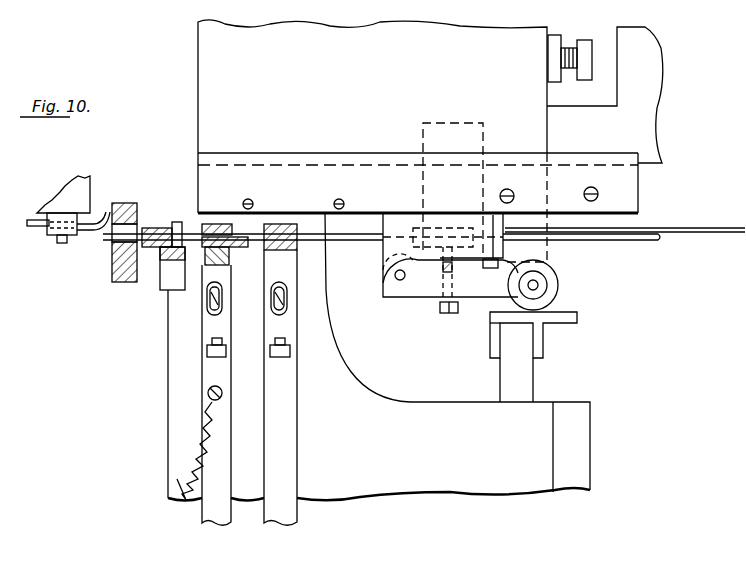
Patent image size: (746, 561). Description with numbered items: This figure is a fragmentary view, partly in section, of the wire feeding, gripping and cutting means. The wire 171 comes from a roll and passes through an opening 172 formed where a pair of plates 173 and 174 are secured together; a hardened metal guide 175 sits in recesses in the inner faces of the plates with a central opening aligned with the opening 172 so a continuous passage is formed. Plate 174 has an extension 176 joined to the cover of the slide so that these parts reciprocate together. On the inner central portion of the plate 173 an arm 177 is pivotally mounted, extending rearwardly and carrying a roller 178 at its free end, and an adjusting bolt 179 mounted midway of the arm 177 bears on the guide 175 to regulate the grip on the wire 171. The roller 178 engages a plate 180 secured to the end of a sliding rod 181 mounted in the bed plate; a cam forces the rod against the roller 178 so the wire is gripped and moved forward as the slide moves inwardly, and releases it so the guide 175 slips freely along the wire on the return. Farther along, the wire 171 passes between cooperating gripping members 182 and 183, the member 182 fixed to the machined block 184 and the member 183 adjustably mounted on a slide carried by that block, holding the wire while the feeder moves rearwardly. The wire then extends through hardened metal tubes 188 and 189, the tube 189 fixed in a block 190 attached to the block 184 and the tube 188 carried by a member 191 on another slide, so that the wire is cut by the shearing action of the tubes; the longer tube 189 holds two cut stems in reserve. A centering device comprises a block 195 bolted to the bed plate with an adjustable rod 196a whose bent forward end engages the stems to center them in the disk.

The wire 171 is at (668, 224).
The opening 172 is at (393, 240).
The plate 173 is at (547, 250).
The plate 174 is at (536, 224).
The hardened metal guide 175 is at (437, 225).
The extension 176 is at (484, 150).
The arm 177 is at (430, 303).
The roller 178 is at (508, 307).
The adjusting bolt 179 is at (452, 294).
The plate 180 is at (556, 323).
The sliding rod 181 is at (526, 392).
The gripping member 182 is at (279, 224).
The gripping member 183 is at (298, 256).
The machined block 184 is at (403, 410).
The hardened metal tube 188 is at (199, 230).
The hardened metal tube 189 is at (148, 228).
The block 190 is at (165, 272).
The member 191 is at (222, 318).
The block 195 is at (80, 194).
The rod 196a is at (30, 228).